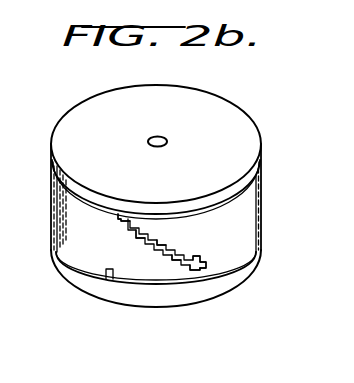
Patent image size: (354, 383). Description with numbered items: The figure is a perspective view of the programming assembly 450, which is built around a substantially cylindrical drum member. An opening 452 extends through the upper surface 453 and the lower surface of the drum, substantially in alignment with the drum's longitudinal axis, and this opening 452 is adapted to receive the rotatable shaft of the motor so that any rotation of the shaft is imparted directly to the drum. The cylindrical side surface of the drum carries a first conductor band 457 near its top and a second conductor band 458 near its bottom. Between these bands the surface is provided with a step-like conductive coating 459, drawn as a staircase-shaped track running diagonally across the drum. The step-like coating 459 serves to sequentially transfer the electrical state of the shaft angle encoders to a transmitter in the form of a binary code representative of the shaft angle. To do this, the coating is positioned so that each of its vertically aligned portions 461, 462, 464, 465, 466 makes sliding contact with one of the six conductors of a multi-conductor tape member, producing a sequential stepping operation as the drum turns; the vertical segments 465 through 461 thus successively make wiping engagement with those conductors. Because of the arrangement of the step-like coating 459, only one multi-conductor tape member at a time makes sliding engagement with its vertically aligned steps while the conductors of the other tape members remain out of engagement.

The programming assembly 450 is at (270, 192).
The opening 452 is at (185, 141).
The upper surface 453 is at (112, 155).
The first conductor band 457 is at (259, 173).
The second conductor band 458 is at (260, 247).
The step-like conductive coating 459 is at (175, 251).
The vertically aligned portion 461 is at (208, 260).
The vertically aligned portion 462 is at (198, 257).
The vertically aligned portion 464 is at (157, 244).
The vertically aligned portion 465 is at (134, 235).
The vertically aligned portion 466 is at (121, 218).